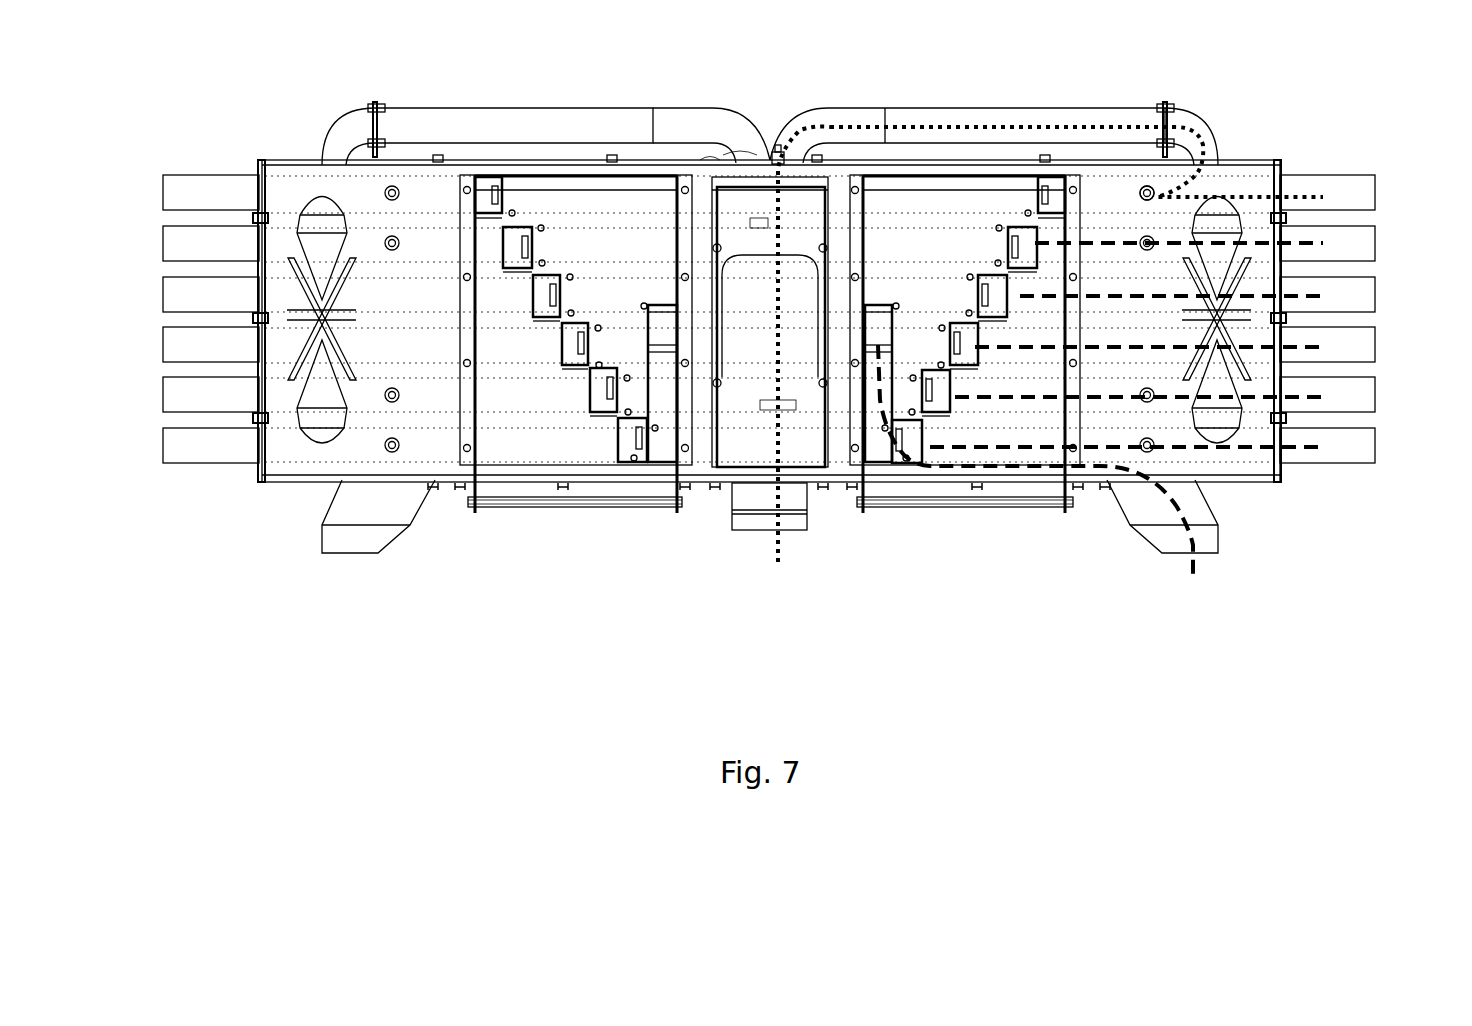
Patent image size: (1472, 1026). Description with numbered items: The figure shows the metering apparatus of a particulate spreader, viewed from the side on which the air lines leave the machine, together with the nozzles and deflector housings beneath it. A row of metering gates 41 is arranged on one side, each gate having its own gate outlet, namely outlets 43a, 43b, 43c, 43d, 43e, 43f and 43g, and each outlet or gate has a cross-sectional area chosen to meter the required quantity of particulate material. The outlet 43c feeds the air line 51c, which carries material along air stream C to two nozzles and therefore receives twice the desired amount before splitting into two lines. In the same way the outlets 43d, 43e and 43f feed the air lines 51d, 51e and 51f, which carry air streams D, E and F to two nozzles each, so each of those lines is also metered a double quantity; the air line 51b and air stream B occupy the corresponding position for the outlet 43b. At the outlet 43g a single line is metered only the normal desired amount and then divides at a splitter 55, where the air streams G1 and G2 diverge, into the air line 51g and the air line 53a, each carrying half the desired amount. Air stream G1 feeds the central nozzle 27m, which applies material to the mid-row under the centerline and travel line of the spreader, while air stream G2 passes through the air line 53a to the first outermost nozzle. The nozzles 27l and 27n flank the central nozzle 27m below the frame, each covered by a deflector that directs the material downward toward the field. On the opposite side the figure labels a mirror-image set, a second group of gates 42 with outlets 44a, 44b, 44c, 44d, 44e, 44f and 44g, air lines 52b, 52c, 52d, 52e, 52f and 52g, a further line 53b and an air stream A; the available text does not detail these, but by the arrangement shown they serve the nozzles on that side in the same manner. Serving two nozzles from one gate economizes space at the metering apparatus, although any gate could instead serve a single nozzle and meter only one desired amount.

The gate 41 is at (877, 182).
The first module frame 42 is at (663, 183).
The valve unit 43a is at (877, 325).
The valve unit 43b is at (923, 443).
The gate outlet 43c is at (938, 400).
The gate outlet 43d is at (963, 350).
The gate outlet 43e is at (980, 275).
The gate outlet 43f is at (1022, 240).
The gate outlet 43g is at (1047, 192).
The valve unit 44a is at (660, 320).
The valve unit 44b is at (628, 440).
The valve unit 44c is at (594, 405).
The valve unit 44d is at (567, 350).
The valve unit 44e is at (543, 293).
The valve unit 44f is at (510, 247).
The valve unit 44g is at (485, 183).
The connector 51b is at (1376, 447).
The air line 51c is at (1376, 396).
The air line 51d is at (1376, 346).
The air line 51e is at (1376, 296).
The air line 51f is at (1376, 245).
The air line 51g is at (1376, 195).
The connector 52b is at (160, 435).
The connector 52c is at (160, 385).
The connector 52d is at (160, 335).
The connector 52e is at (160, 285).
The connector 52f is at (160, 235).
The connector 52g is at (160, 185).
The air line 53a is at (1138, 117).
The pipe 53b is at (405, 117).
The splitter 55 is at (1168, 198).
The particle delivery nozzle 27l is at (1120, 520).
The central nozzle 27m is at (808, 511).
The particle delivery nozzle 27n is at (417, 522).
The air stream G1 is at (796, 357).
The air stream G2 is at (1097, 168).
The view direction A is at (344, 591).
The flow path B is at (1143, 448).
The air stream C is at (1156, 398).
The air stream D is at (1166, 350).
The air stream E is at (1188, 296).
The air stream F is at (1195, 245).